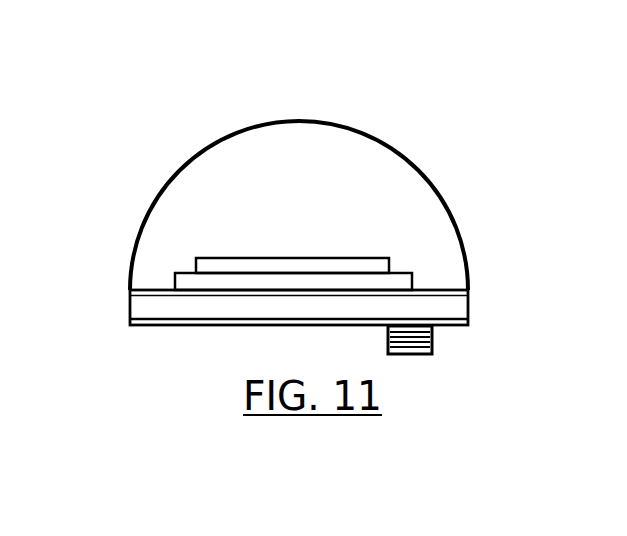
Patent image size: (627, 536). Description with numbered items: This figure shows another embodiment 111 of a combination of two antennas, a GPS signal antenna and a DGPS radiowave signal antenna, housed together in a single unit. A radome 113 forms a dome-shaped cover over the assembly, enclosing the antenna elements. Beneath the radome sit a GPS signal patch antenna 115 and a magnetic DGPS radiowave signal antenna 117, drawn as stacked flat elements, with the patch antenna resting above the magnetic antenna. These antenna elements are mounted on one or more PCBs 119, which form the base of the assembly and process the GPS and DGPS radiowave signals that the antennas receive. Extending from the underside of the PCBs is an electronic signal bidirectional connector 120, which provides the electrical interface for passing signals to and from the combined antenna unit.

The combination antenna embodiment 111 is at (436, 95).
The radome 113 is at (422, 169).
The GPS signal patch antenna 115 is at (347, 264).
The magnetic DGPS radiowave signal antenna 117 is at (367, 283).
The PCBs 119 is at (130, 295).
The electronic signal bidirectional connector 120 is at (433, 339).